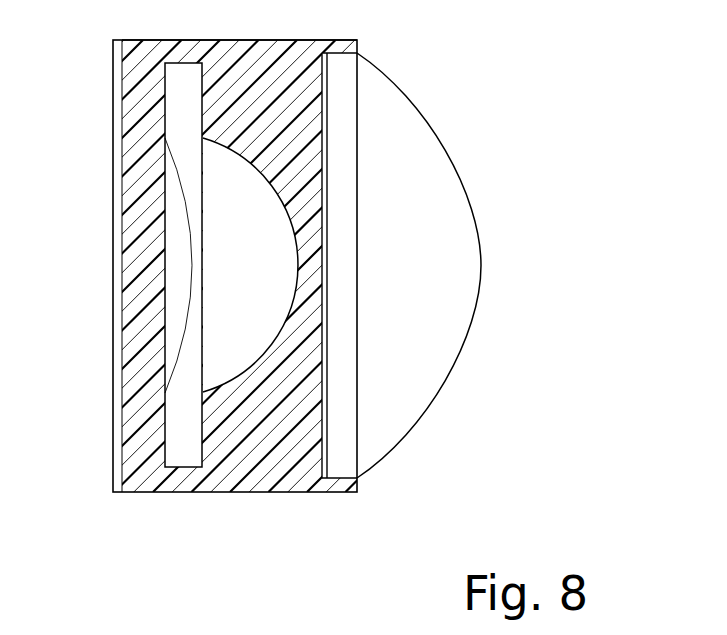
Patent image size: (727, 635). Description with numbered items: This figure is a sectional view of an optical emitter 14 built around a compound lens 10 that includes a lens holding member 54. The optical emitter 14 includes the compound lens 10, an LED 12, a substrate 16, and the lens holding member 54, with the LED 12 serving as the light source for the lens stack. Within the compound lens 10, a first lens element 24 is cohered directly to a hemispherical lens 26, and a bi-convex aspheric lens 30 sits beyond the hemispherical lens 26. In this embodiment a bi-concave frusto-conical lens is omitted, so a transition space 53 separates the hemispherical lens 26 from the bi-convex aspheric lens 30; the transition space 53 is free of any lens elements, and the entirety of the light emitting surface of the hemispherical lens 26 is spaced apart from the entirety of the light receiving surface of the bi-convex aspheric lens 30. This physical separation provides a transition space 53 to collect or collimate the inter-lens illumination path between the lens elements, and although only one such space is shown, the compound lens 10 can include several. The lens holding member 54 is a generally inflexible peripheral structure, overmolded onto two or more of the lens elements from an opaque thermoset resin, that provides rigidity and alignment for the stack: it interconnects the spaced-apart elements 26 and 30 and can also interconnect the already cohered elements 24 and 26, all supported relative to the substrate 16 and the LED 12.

The compound lens 10 is at (472, 523).
The LED 12 is at (122, 247).
The optical emitter 14 is at (450, 56).
The substrate 16 is at (122, 355).
The lens element 24 is at (185, 467).
The hemispherical lens 26 is at (218, 388).
The bi-convex aspheric lens 30 is at (397, 442).
The transition space 53 is at (320, 260).
The lens holding member 54 is at (273, 40).